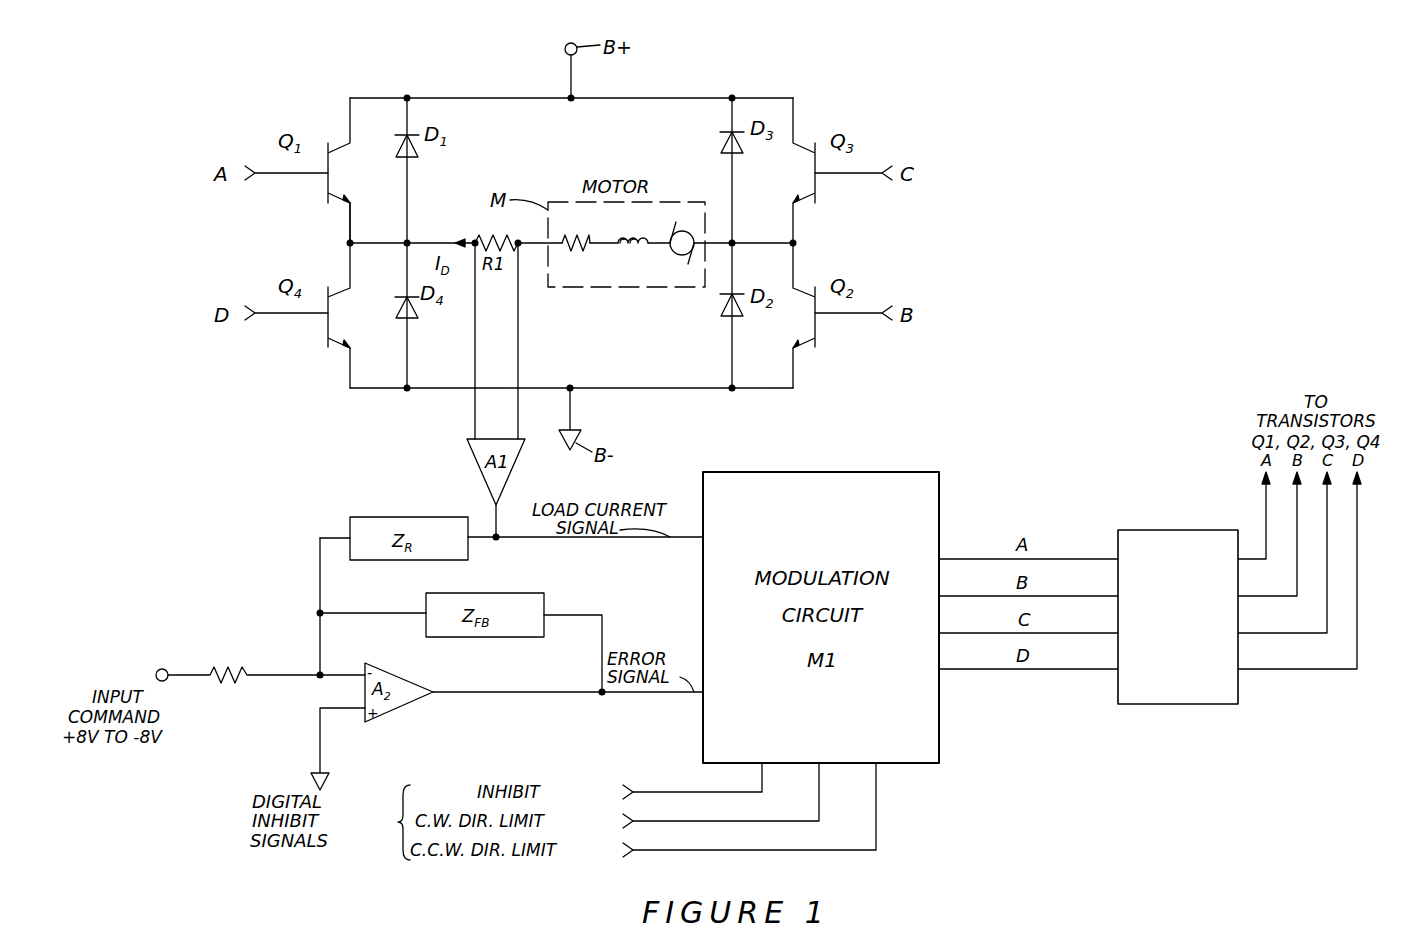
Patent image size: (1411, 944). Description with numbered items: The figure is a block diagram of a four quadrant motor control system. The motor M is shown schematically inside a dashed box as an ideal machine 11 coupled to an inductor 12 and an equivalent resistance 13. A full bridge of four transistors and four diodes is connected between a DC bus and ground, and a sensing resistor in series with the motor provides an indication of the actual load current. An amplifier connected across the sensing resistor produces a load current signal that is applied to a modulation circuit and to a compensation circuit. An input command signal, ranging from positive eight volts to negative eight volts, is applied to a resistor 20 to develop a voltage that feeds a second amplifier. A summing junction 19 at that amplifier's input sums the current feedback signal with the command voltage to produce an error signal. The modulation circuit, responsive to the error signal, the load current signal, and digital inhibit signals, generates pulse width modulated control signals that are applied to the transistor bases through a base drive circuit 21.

The ideal machine 11 is at (683, 255).
The inductor 12 is at (624, 244).
The equivalent resistance 13 is at (564, 244).
The summing junction 19 is at (322, 672).
The resistor 20 is at (212, 668).
The base drive circuit 21 is at (1145, 530).